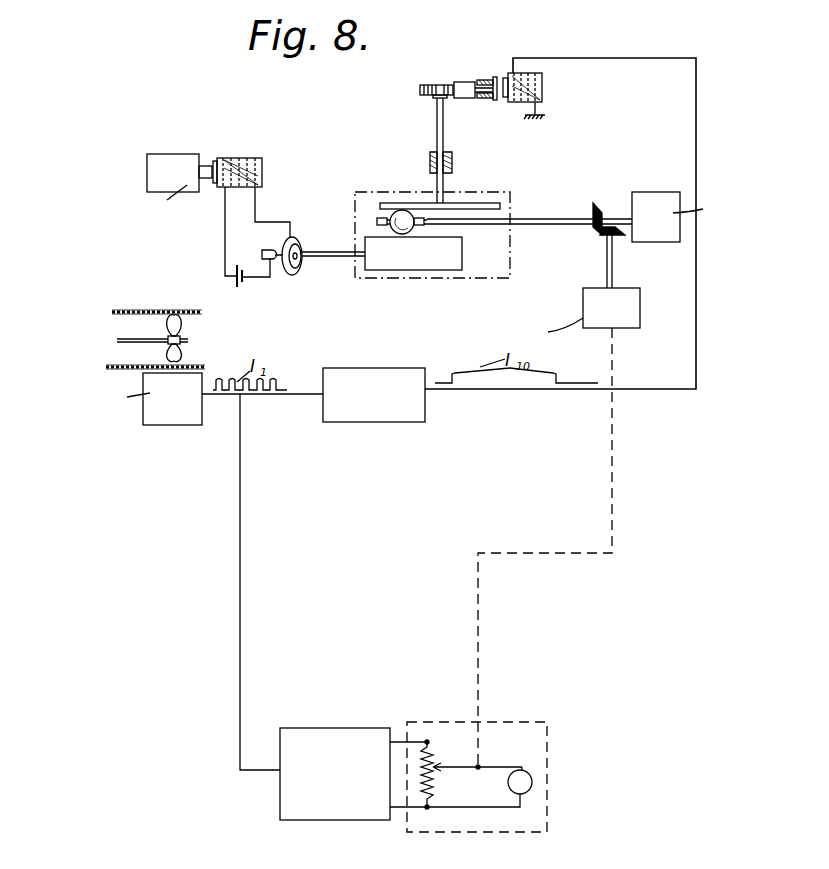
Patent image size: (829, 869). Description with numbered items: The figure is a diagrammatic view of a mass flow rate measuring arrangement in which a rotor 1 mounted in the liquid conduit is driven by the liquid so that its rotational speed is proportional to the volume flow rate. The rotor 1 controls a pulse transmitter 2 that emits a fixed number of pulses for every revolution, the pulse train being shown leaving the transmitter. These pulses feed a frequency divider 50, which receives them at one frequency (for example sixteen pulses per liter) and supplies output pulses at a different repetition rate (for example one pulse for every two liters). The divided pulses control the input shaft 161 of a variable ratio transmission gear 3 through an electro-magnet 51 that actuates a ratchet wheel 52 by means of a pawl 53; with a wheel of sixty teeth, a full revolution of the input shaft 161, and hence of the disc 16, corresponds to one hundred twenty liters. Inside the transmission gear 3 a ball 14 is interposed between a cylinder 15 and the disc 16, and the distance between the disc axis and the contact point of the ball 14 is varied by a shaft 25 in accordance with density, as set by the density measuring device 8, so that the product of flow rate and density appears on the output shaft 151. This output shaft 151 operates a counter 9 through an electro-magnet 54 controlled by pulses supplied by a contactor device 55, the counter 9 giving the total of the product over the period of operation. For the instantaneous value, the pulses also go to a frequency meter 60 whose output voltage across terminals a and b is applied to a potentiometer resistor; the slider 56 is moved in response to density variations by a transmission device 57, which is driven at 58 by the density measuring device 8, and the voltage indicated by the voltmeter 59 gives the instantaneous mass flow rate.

The rotor 1 is at (173, 325).
The pulse transmitter 2 is at (167, 413).
The variable ratio transmission gear 3 is at (475, 277).
The density measuring device 8 is at (650, 193).
The counter 9 is at (180, 158).
The ball 14 is at (390, 227).
The cylinder 15 is at (420, 258).
The output shaft 151 is at (340, 257).
The disc 16 is at (406, 205).
The input shaft 161 is at (443, 147).
The shaft 25 is at (545, 220).
The frequency divider 50 is at (363, 373).
The electro-magnet 51 is at (532, 75).
The ratchet wheel 52 is at (432, 85).
The pawl 53 is at (468, 80).
The electro-magnet 54 is at (238, 157).
The contactor device 55 is at (290, 232).
The slider 56 is at (465, 758).
The transmission device 57 is at (633, 302).
The drive 58 is at (601, 236).
The voltmeter 59 is at (522, 782).
The frequency meter 60 is at (338, 740).